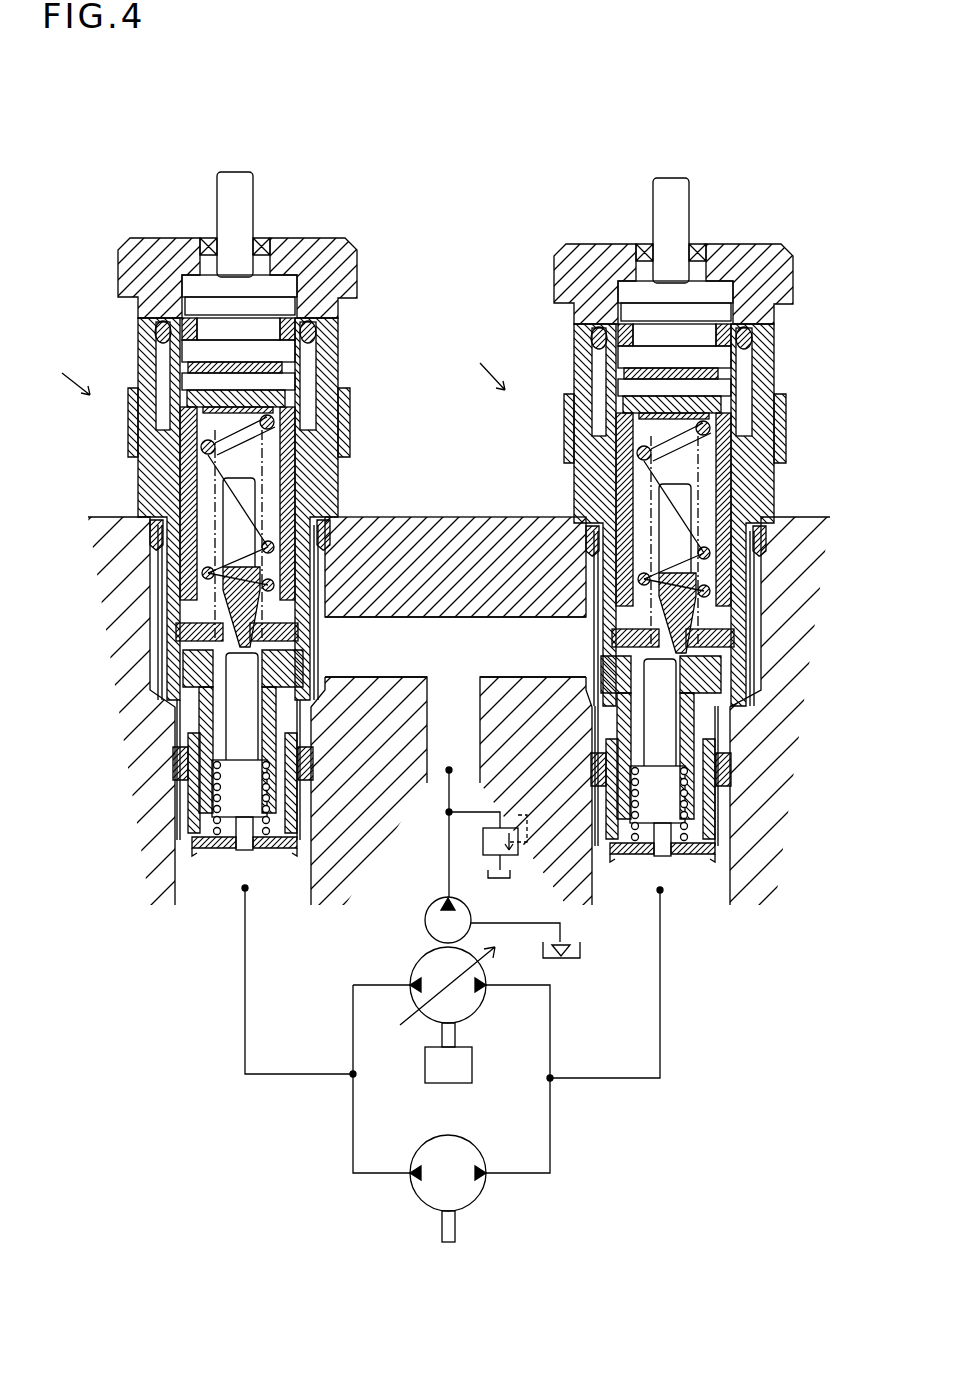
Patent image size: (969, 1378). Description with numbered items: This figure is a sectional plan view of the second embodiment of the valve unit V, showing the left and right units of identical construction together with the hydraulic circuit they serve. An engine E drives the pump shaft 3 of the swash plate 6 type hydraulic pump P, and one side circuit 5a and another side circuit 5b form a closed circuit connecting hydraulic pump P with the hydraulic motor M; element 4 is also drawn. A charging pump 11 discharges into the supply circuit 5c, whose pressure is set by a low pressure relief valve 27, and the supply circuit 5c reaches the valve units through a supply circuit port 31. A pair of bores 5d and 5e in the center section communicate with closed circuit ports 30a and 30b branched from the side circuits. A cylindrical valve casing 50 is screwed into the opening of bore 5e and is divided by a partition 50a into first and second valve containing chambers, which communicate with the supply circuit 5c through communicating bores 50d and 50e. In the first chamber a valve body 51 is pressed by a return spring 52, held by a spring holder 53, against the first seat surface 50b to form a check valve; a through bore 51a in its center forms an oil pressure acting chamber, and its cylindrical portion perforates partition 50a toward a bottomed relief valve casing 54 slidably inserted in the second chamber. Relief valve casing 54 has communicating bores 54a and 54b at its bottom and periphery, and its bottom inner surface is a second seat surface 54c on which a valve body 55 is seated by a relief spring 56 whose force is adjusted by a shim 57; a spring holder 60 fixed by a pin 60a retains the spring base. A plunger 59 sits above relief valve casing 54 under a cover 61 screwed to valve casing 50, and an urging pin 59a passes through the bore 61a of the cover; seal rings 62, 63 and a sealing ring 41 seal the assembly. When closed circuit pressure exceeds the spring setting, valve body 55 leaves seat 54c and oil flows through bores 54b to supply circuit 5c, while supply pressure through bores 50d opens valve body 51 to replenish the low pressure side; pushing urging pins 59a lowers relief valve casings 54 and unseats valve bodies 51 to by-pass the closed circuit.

The cover 61 is at (150, 236).
The bore 61a is at (647, 277).
The seal ring 62 is at (208, 237).
The urging pin 59a is at (247, 190).
The plunger 59 is at (280, 305).
The valve casing 50 is at (322, 345).
The spring holder 60 is at (190, 368).
The pin 60a is at (283, 382).
The relief spring 56 is at (277, 433).
The shim 57 is at (170, 432).
The valve body 55 is at (232, 470).
The relief valve casing 54 is at (335, 478).
The seal ring 63 is at (182, 325).
The sealing ring 41 is at (773, 357).
The valve unit V is at (275, 364).
The communicating bore 54a is at (176, 632).
The communicating bore 54b is at (158, 540).
The second seat surface 54c is at (168, 590).
The bore 5d is at (180, 670).
The bore 5e is at (747, 687).
The supply circuit 5c is at (446, 606).
The partition 50a is at (180, 692).
The first seat surface 50b is at (176, 760).
The communicating bore 50d is at (737, 765).
The communicating bore 50e is at (582, 628).
The valve body 51 is at (222, 792).
The through bore 51a is at (232, 710).
The return spring 52 is at (210, 822).
The spring holder 53 is at (214, 850).
The closed circuit port 30a is at (241, 892).
The closed circuit port 30b is at (660, 893).
The supply circuit port 31 is at (447, 774).
The charging pump 11 is at (427, 907).
The low pressure relief valve 27 is at (515, 855).
The hydraulic pump P is at (416, 958).
The swash plate 6 is at (494, 962).
The pump shaft 3 is at (456, 1034).
The engine E is at (424, 1066).
The hydraulic motor M is at (416, 1208).
The motor shaft 4 is at (457, 1225).
The side circuit 5a is at (352, 1142).
The side circuit 5b is at (552, 1128).